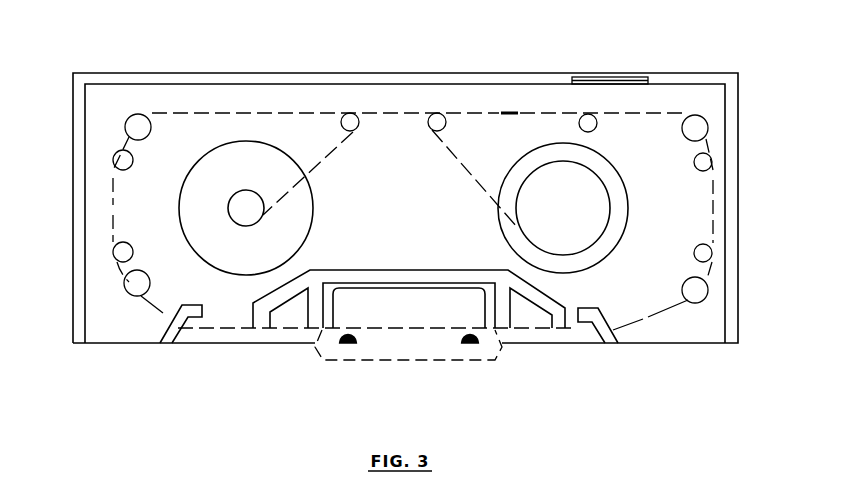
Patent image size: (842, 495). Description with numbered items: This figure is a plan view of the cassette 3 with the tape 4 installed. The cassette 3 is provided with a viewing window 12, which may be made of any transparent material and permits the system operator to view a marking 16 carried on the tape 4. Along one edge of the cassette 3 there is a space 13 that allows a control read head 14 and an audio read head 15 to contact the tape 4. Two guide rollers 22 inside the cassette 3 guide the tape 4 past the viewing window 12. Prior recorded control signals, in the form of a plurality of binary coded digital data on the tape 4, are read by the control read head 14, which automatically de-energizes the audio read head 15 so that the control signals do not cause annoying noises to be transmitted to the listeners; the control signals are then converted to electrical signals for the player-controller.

The cassette 3 is at (190, 76).
The tape 4 is at (263, 112).
The viewing window 12 is at (610, 77).
The space 13 is at (423, 362).
The control read head 14 is at (471, 343).
The audio read head 15 is at (347, 343).
The marking 16 is at (506, 112).
The guide rollers 22 is at (591, 123).